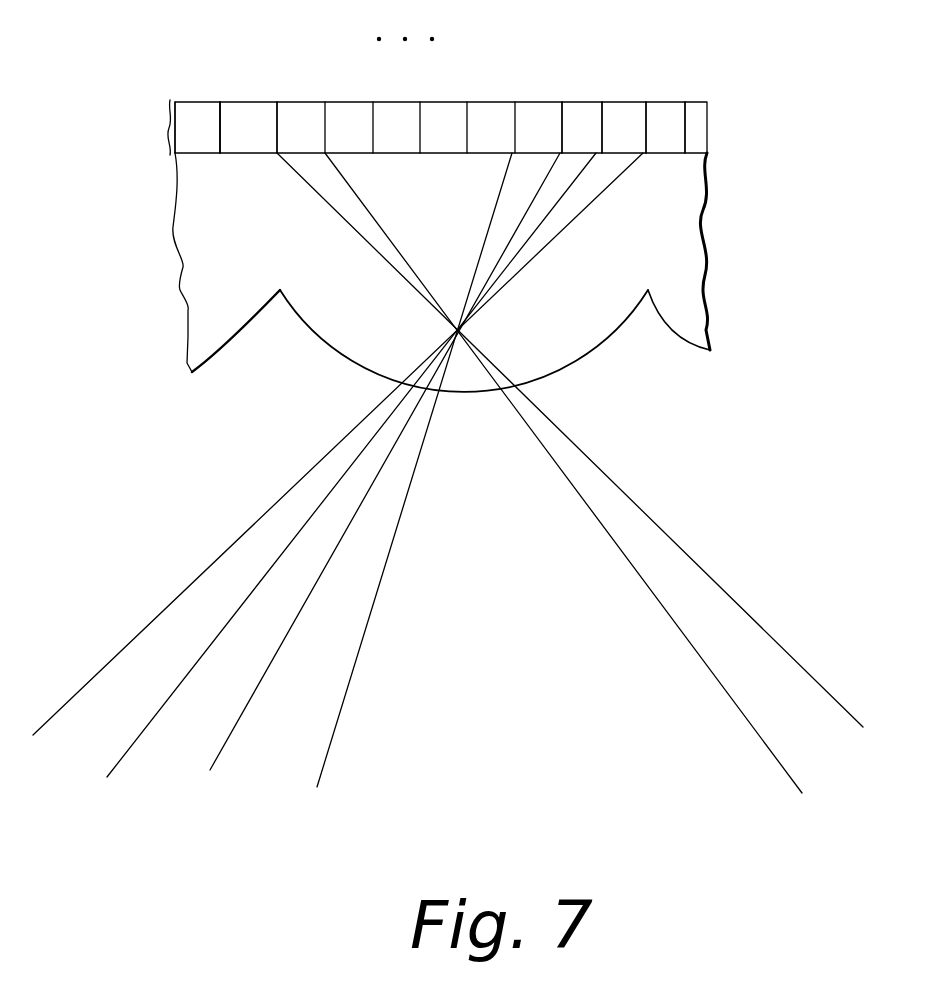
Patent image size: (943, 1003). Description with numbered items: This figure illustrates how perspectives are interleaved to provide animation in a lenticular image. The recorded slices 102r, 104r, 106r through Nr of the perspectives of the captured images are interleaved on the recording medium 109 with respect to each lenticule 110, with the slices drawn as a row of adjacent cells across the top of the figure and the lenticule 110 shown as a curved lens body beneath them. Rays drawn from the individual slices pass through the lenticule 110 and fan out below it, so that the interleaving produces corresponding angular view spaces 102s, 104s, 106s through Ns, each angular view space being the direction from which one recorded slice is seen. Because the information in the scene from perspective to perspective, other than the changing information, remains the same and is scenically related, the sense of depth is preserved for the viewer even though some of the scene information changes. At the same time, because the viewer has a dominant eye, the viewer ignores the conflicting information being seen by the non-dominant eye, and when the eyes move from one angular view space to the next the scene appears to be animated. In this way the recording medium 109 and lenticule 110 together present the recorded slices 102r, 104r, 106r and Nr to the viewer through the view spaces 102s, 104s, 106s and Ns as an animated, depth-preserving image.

The recording medium 109 is at (712, 130).
The lenticule 110 is at (598, 348).
The recorded slice 102r is at (247, 101).
The recorded slice 104r is at (195, 101).
The recorded slice 106r is at (537, 101).
The recorded slice Nr is at (303, 101).
The angular view space 102s is at (148, 727).
The angular view space 104s is at (250, 697).
The angular view space 106s is at (351, 678).
The angular view space Ns is at (793, 660).